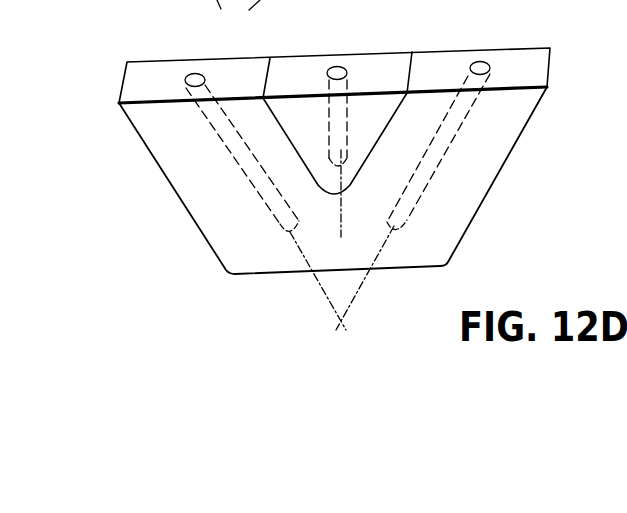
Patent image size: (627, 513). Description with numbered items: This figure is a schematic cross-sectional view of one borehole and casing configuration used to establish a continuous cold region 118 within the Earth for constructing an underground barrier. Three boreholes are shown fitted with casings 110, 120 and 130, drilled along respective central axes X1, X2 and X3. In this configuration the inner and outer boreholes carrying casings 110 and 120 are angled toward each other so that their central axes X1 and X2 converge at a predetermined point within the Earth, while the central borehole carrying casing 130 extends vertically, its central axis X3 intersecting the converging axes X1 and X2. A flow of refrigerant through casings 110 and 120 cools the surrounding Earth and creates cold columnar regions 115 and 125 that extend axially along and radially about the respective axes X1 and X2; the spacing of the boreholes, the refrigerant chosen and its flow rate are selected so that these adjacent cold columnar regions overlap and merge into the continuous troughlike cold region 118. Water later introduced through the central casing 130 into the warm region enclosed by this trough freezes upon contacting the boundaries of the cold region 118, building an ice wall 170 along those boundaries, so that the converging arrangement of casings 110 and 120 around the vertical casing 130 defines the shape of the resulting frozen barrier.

The continuous cold troughlike region 118 is at (397, 34).
The ice wall 170 is at (297, 72).
The casing 110 is at (220, 134).
The casing 130 is at (347, 118).
The casing 120 is at (438, 163).
The cold columnar region 115 is at (207, 196).
The cold columnar region 125 is at (456, 213).
The central axis X1 is at (320, 276).
The central axis X2 is at (374, 278).
The central axis X3 is at (341, 196).